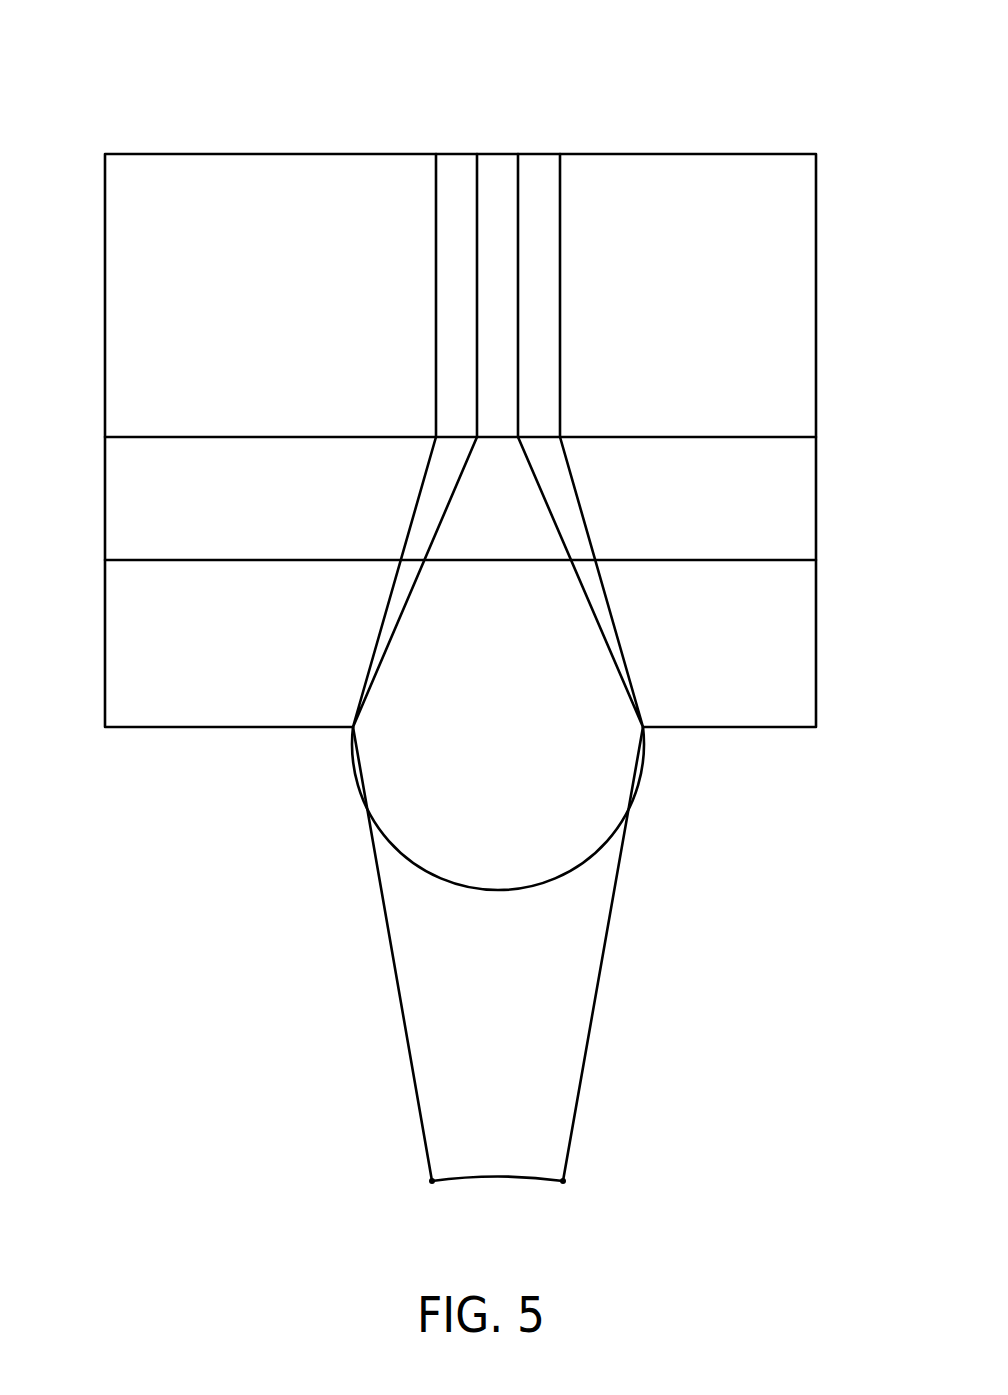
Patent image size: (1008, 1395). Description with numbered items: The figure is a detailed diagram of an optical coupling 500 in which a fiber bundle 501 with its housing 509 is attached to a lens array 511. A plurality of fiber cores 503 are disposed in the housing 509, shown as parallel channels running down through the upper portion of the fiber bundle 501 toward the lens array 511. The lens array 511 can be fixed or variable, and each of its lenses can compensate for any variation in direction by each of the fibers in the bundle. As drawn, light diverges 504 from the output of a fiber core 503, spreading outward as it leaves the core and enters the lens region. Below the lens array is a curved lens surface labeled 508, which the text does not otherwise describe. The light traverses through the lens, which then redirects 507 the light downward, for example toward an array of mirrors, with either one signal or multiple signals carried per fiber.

The optical coupling 500 is at (727, 80).
The fiber bundle 501 is at (718, 302).
The fiber cores 503 is at (493, 313).
The diverging light 504 is at (579, 500).
The housing 509 is at (287, 515).
The lens array 511 is at (263, 672).
The curved chamber 508 is at (503, 817).
The redirected light 507 is at (596, 1003).